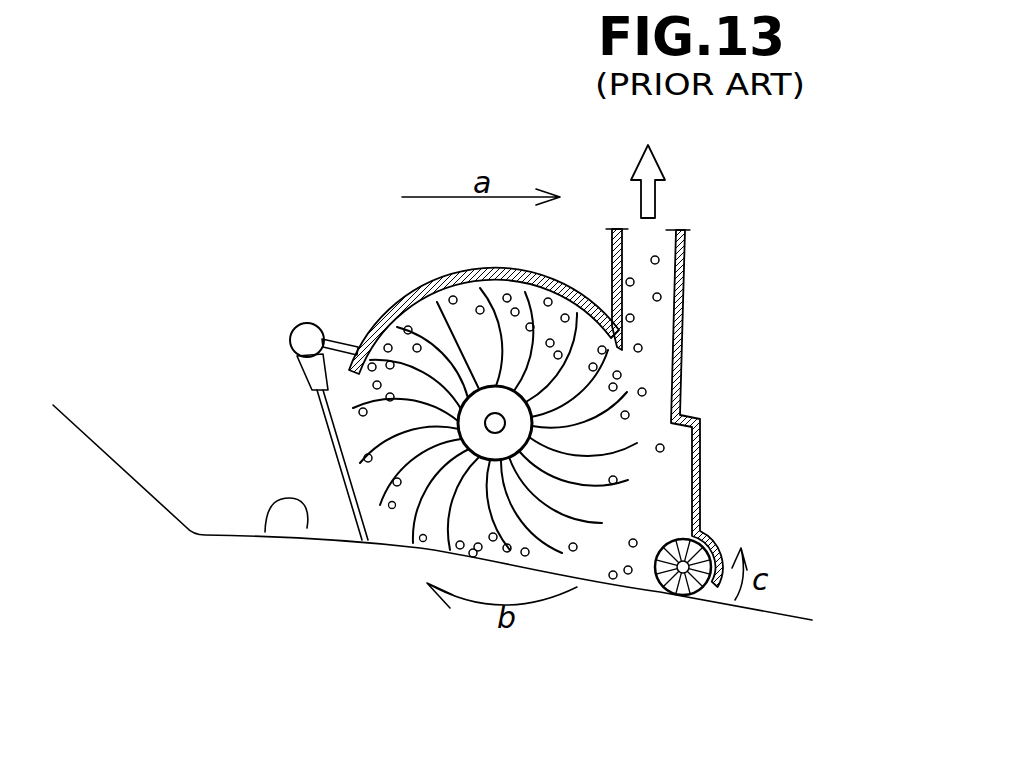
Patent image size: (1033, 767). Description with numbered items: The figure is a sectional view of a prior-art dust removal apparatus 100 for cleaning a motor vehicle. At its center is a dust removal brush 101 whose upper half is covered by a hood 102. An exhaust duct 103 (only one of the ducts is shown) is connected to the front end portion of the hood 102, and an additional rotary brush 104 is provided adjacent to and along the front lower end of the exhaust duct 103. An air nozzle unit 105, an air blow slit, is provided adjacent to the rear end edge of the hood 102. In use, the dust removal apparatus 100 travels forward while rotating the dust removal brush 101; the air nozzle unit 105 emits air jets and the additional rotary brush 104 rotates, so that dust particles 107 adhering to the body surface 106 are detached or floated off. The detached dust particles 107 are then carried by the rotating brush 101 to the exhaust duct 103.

The dust removal apparatus 100 is at (382, 92).
The dust removal brush 101 is at (447, 314).
The hood 102 is at (383, 320).
The exhaust duct 103 is at (686, 264).
The additional rotary brush 104 is at (710, 537).
The air nozzle unit 105 is at (306, 377).
The body surface 106 is at (307, 528).
The dust particles 107 is at (392, 508).